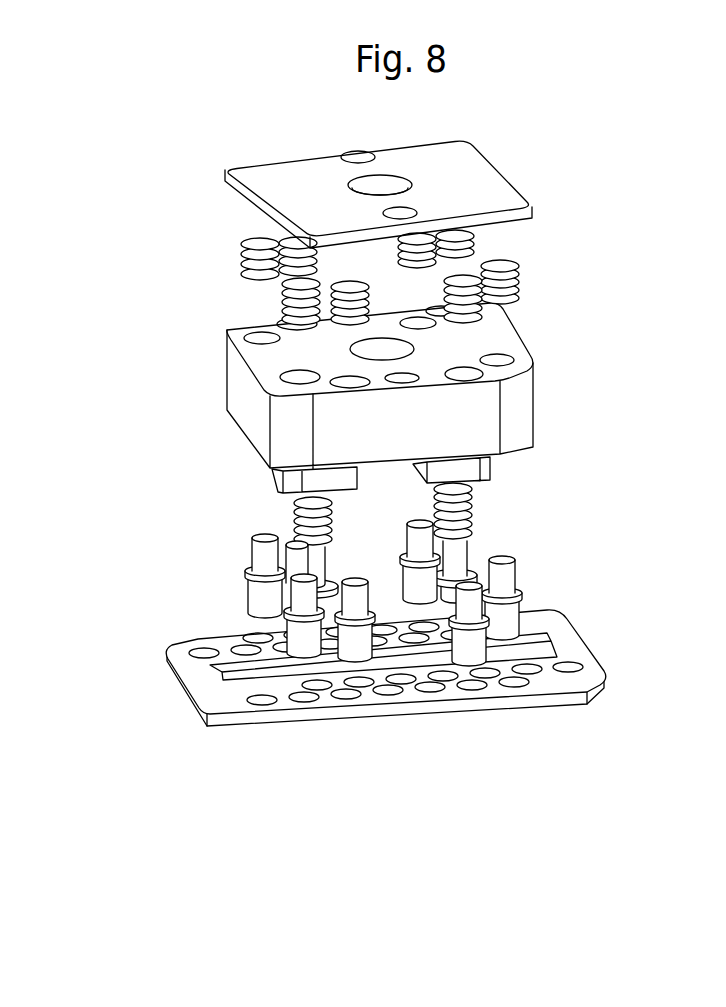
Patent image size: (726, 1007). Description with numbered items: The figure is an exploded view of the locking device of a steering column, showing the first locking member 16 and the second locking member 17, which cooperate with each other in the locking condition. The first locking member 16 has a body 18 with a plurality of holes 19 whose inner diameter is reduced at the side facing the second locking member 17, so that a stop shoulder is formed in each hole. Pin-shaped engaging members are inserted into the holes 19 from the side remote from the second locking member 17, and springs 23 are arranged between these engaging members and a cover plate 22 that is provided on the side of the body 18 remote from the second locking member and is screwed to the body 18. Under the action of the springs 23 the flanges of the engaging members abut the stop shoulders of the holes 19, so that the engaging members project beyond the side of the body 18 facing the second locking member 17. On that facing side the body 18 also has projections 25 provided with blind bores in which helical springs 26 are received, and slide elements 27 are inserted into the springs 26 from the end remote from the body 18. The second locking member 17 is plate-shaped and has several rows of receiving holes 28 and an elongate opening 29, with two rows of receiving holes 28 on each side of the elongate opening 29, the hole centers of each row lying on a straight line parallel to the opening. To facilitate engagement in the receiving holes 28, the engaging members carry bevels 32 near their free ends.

The first locking member 16 is at (567, 396).
The second locking member 17 is at (200, 677).
The body 18 is at (247, 387).
The holes 19 is at (500, 360).
The cover plate 22 is at (483, 180).
The springs 23 is at (243, 267).
The projections 25 is at (277, 477).
The springs 26 is at (473, 498).
The slide elements 27 is at (450, 560).
The receiving holes 28 is at (512, 683).
The elongate opening 29 is at (247, 680).
The bevels 32 is at (260, 613).